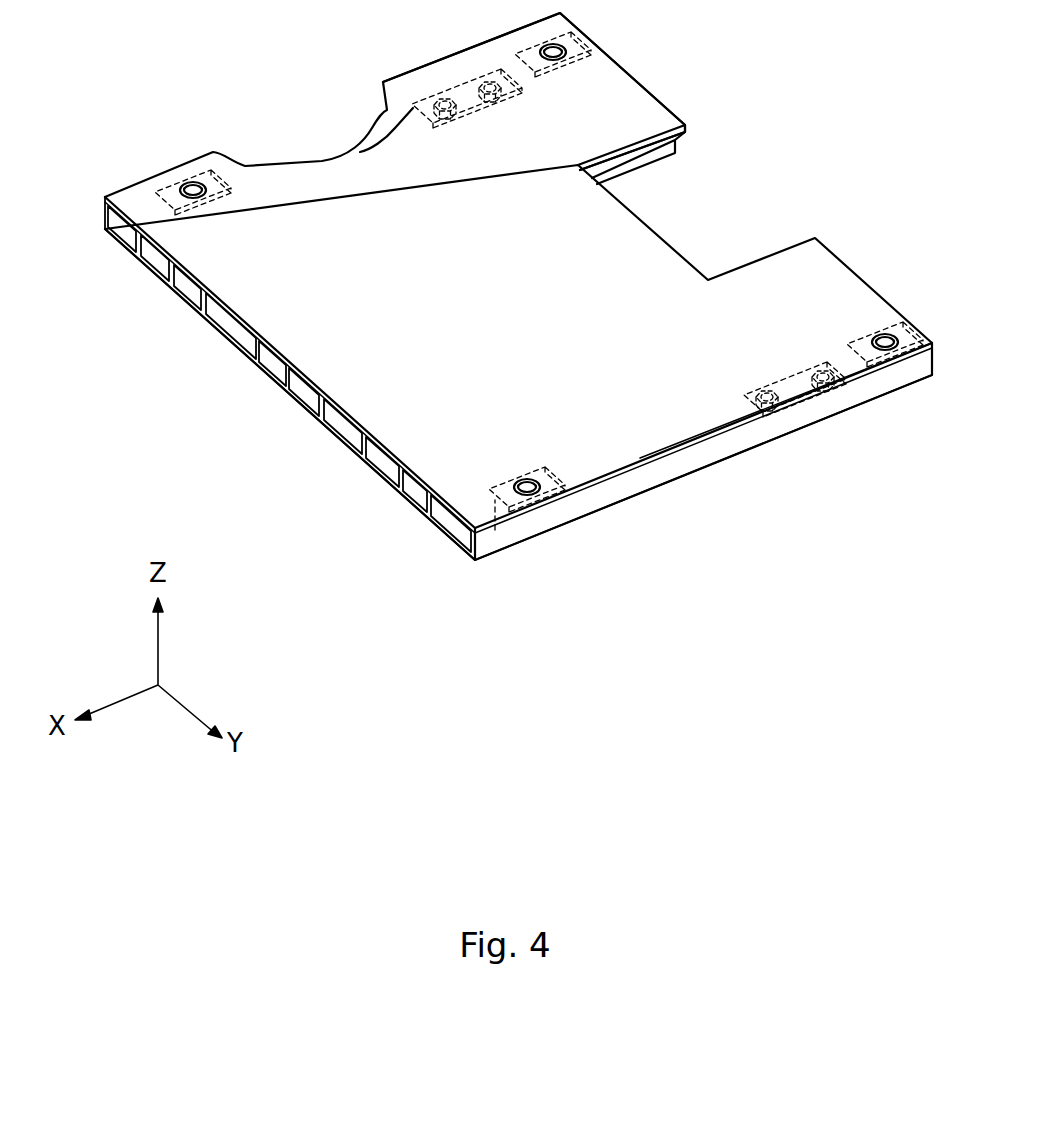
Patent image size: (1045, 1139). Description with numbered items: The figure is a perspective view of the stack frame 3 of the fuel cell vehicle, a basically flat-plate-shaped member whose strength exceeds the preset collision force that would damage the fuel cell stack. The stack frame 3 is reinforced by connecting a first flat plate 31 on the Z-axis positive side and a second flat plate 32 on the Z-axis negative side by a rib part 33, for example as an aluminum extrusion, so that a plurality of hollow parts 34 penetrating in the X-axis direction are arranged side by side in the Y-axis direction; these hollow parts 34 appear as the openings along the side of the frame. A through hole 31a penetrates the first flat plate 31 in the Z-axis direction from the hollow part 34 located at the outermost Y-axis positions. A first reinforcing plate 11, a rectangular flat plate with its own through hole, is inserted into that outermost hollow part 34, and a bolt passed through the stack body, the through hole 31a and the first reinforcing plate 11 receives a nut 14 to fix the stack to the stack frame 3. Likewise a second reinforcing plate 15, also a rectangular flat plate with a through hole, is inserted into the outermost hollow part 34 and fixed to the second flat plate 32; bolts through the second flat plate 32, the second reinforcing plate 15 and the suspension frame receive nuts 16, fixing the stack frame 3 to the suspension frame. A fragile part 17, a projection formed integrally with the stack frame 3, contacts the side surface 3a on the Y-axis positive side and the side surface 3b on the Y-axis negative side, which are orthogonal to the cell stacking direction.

The stack frame 3 is at (483, 288).
The side surface on the Y-axis positive side 3a is at (695, 457).
The side surface on the Y-axis negative side 3b is at (105, 217).
The first reinforcing plate 11 is at (495, 530).
The nut 14 is at (527, 513).
The second reinforcing plate 15 is at (815, 420).
The nut 16 is at (768, 383).
The fragile part 17 is at (635, 463).
The first flat plate 31 is at (633, 102).
The through hole 31a is at (545, 498).
The second flat plate 32 is at (343, 430).
The rib part 33 is at (280, 378).
The hollow part 34 is at (383, 462).